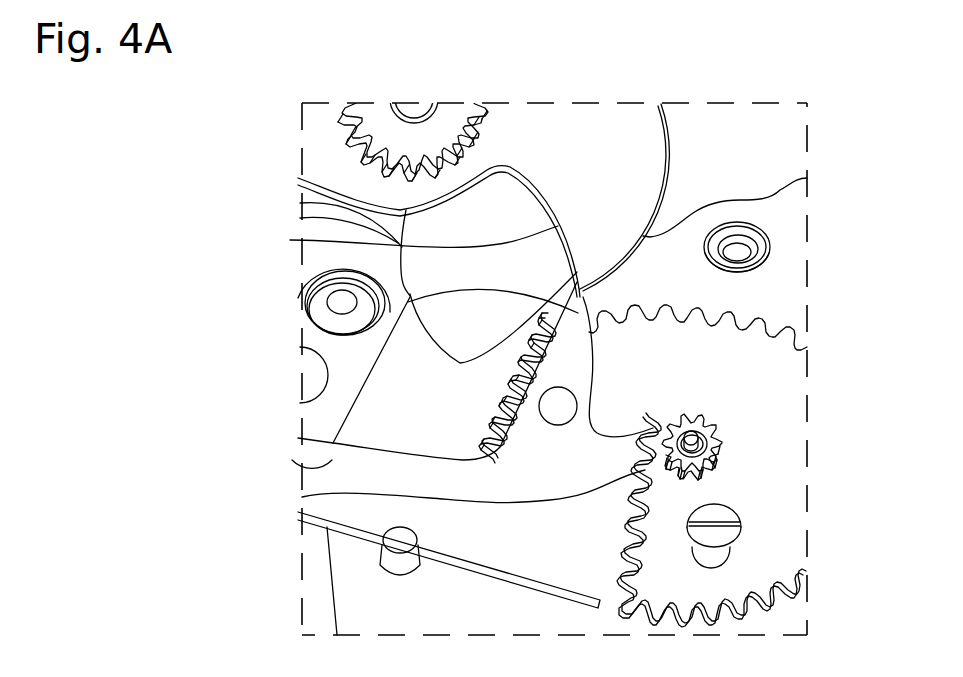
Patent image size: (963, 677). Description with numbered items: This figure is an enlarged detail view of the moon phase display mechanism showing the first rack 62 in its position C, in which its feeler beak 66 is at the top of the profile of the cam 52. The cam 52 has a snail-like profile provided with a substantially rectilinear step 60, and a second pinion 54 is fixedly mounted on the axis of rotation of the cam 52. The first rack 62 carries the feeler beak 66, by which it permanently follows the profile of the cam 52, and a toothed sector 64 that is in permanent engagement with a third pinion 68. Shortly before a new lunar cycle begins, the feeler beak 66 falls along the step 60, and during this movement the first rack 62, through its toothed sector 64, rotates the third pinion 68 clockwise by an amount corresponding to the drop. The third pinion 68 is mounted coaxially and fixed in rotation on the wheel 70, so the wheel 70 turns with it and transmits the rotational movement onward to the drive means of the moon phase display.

The cam 52 is at (561, 127).
The second pinion 54 is at (372, 108).
The step 60 is at (340, 237).
The first rack 62 is at (333, 458).
The toothed sector 64 is at (302, 497).
The feeler beak 66 is at (408, 302).
The third pinion 68 is at (725, 427).
The wheel 70 is at (777, 467).